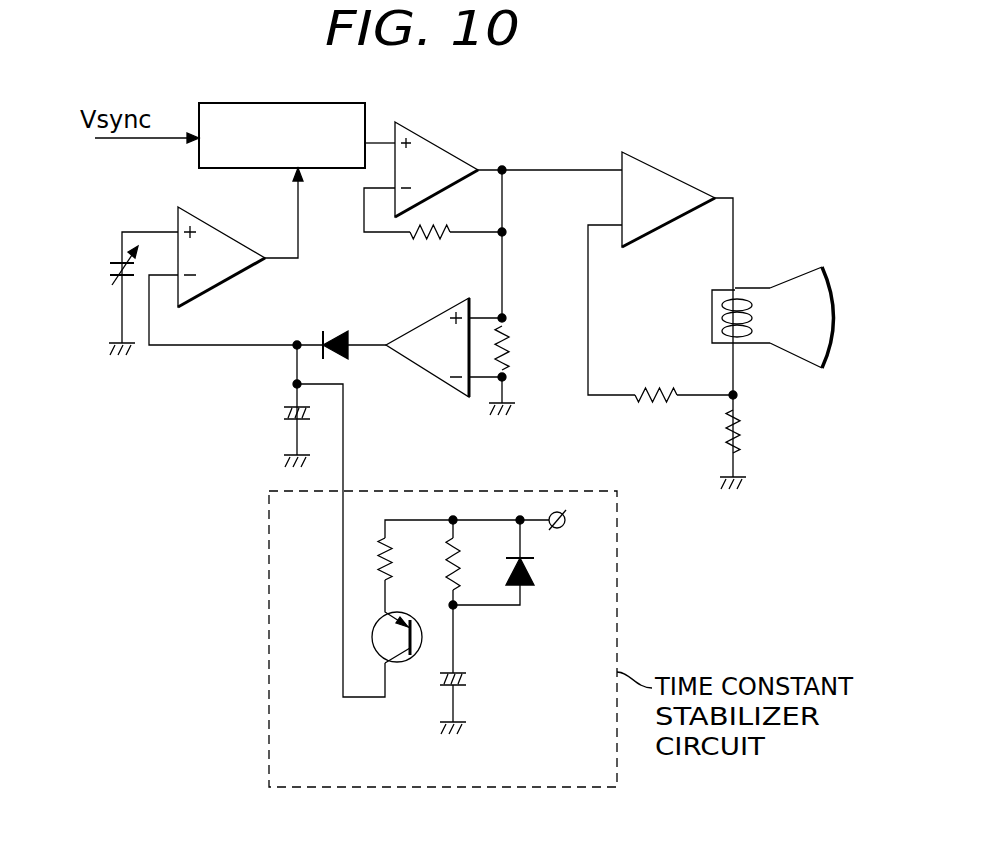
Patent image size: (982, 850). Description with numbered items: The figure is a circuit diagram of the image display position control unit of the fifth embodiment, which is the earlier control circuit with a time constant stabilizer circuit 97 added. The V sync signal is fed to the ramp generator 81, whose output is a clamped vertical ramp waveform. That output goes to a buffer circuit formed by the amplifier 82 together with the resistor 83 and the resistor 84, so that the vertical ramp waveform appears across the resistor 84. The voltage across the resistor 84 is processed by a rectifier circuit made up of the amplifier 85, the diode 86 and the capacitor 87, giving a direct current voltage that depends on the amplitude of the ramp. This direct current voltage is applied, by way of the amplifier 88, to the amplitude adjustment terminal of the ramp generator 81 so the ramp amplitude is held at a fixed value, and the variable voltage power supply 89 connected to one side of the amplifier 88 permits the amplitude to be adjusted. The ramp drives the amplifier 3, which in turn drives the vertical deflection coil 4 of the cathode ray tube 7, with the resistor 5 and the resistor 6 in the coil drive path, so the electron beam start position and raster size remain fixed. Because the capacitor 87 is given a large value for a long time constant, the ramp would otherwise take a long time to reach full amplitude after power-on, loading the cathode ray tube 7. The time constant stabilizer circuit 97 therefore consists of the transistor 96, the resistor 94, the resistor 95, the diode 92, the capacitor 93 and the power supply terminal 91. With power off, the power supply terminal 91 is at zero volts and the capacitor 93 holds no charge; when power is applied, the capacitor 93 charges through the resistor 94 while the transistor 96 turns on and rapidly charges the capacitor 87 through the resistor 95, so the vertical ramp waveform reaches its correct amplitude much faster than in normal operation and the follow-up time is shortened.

The amplifier 3 is at (676, 172).
The vertical deflection coil 4 is at (716, 311).
The resistor 5 is at (743, 424).
The resistor 6 is at (651, 404).
The cathode ray tube 7 is at (826, 277).
The ramp generator 81 is at (353, 103).
The amplifier 82 is at (445, 145).
The resistor 83 is at (440, 240).
The resistor 84 is at (510, 348).
The amplifier 85 is at (427, 318).
The diode 86 is at (338, 330).
The capacitor 87 is at (285, 407).
The amplifier 88 is at (227, 232).
The variable voltage power supply 89 is at (115, 263).
The power supply terminal 91 is at (566, 519).
The diode 92 is at (534, 575).
The capacitor 93 is at (466, 672).
The resistor 94 is at (456, 553).
The resistor 95 is at (392, 553).
The transistor 96 is at (412, 660).
The time constant stabilizer circuit 97 is at (618, 508).